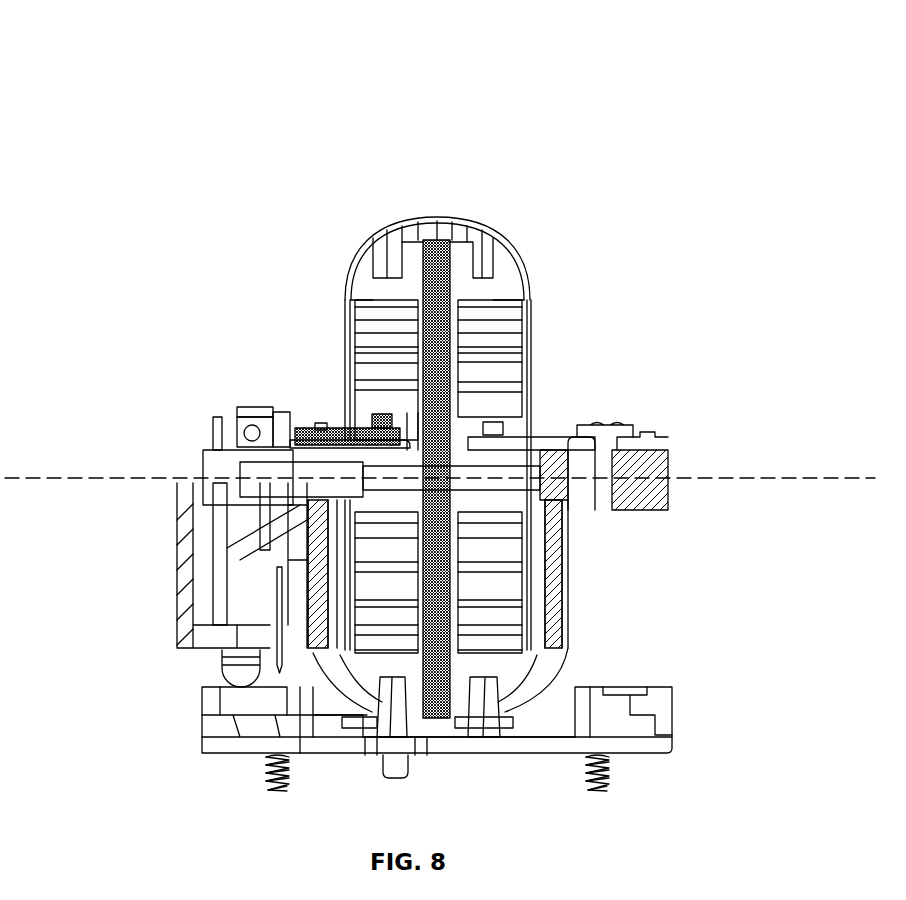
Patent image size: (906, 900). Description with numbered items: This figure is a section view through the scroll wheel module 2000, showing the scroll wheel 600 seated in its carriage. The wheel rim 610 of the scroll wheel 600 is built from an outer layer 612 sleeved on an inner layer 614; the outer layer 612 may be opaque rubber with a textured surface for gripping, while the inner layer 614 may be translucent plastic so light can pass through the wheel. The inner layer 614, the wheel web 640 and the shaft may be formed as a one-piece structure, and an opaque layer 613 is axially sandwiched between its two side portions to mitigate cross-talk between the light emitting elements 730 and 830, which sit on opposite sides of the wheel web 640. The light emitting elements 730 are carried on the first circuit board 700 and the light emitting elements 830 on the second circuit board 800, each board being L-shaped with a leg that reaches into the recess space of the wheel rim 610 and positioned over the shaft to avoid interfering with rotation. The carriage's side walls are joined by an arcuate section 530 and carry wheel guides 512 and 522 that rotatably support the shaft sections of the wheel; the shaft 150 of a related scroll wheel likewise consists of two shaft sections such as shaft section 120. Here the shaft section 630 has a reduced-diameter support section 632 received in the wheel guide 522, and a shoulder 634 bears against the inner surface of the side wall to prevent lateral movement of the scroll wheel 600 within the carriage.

The scroll wheel module 2000 is at (650, 82).
The scroll wheel 600 is at (625, 221).
The wheel rim 610 is at (335, 250).
The outer layer 612 is at (500, 250).
The inner layer 614 is at (528, 283).
The opaque layer 613 is at (428, 354).
The wheel web 640 is at (461, 360).
The shaft 150 is at (449, 416).
The light emitting element 730 is at (503, 424).
The shaft section 120 is at (541, 437).
The first circuit board 700 is at (668, 444).
The arcuate section 530 is at (653, 490).
The wheel guide 512 is at (556, 504).
The wheel guide 522 is at (257, 510).
The shoulder 634 is at (270, 510).
The support section 632 is at (304, 450).
The second circuit board 800 is at (308, 446).
The light emitting element 830 is at (379, 420).
The shaft section 630 is at (352, 428).